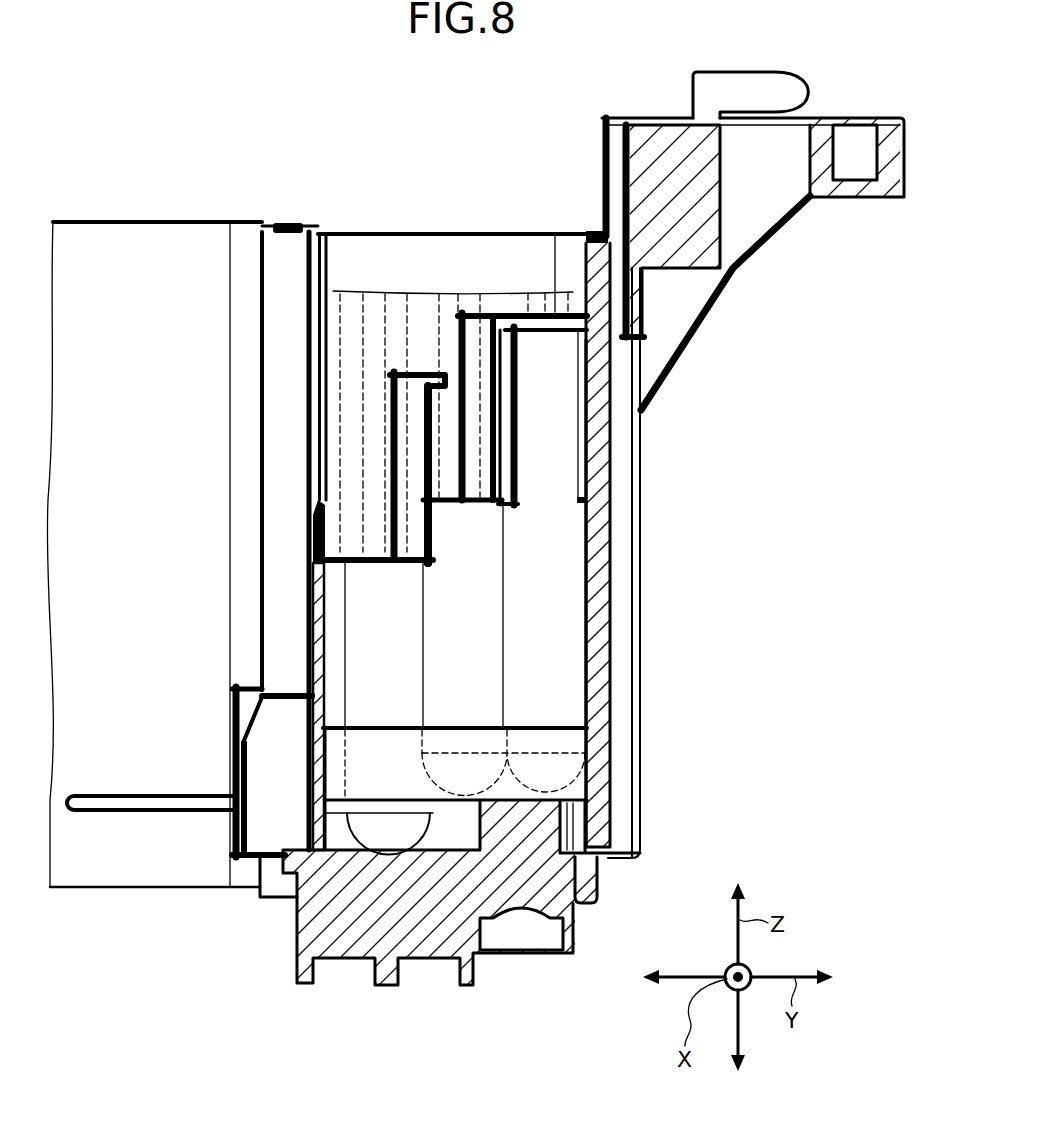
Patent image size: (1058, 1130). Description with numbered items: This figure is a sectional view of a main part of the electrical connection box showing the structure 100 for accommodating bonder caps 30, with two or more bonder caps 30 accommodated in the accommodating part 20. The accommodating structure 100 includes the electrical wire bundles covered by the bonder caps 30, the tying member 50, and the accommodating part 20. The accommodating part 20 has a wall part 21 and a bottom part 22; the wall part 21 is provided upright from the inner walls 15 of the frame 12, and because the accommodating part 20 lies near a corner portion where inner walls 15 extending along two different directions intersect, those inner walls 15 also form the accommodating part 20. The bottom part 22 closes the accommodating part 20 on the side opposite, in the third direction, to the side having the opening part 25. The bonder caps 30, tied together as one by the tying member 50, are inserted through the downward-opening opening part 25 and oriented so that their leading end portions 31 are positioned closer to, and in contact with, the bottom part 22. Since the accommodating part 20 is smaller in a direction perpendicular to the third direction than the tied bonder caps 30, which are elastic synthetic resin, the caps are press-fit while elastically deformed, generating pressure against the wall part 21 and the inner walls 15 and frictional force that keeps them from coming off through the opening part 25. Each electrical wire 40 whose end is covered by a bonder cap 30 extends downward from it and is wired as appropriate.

The accommodating structure 100 is at (523, 218).
The frame 12 is at (641, 530).
The inner walls 15 is at (612, 570).
The accommodating part 20 is at (432, 288).
The wall part 21 is at (312, 652).
The bottom part 22 is at (467, 850).
The opening part 25 is at (332, 557).
The bonder cap 30 is at (557, 593).
The leading end portion 31 is at (510, 786).
The electrical wire 40 is at (338, 423).
The tying member 50 is at (558, 718).